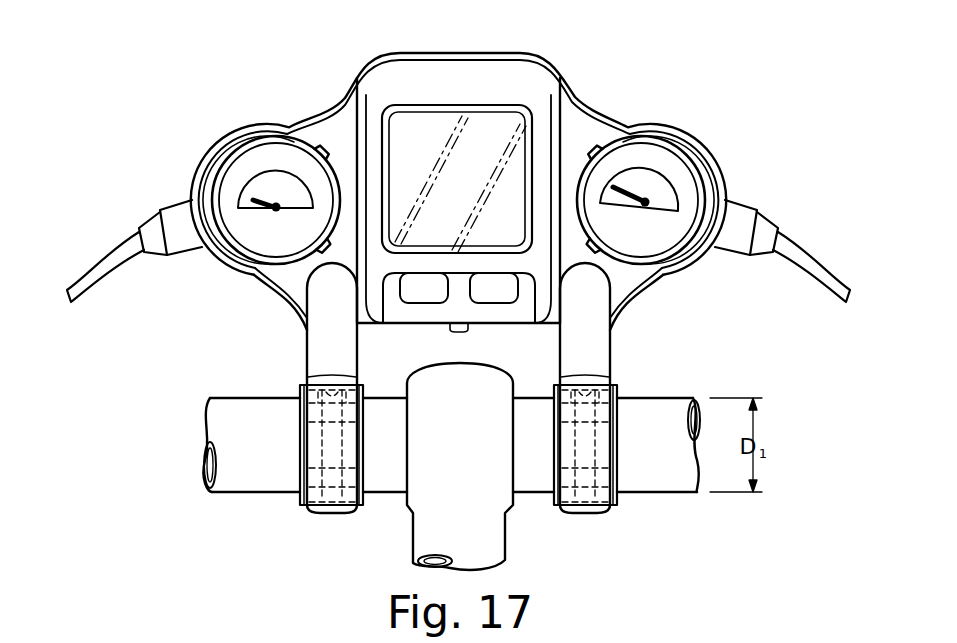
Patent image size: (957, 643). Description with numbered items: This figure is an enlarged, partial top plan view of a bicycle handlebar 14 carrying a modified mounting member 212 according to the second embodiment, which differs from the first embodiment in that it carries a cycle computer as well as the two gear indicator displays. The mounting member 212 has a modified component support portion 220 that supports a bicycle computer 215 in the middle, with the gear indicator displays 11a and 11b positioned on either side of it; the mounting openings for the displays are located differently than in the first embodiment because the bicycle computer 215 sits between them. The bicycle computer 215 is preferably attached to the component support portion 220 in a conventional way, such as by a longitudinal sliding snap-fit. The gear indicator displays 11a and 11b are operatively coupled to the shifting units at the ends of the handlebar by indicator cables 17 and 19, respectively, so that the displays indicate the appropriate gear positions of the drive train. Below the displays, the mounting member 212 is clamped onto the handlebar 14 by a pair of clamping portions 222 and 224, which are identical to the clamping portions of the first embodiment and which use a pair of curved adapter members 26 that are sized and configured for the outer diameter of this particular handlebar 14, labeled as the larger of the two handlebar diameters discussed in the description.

The mounting member 212 is at (597, 104).
The component support portion 220 is at (337, 130).
The bicycle computer 215 is at (507, 83).
The gear indicator display 11a is at (231, 156).
The gear indicator display 11b is at (677, 151).
The indicator cable 17 is at (88, 262).
The indicator cable 19 is at (812, 258).
The adapter member 26 is at (298, 427).
The clamping portion 222 is at (315, 513).
The clamping portion 224 is at (583, 513).
The handlebar 14 is at (670, 494).